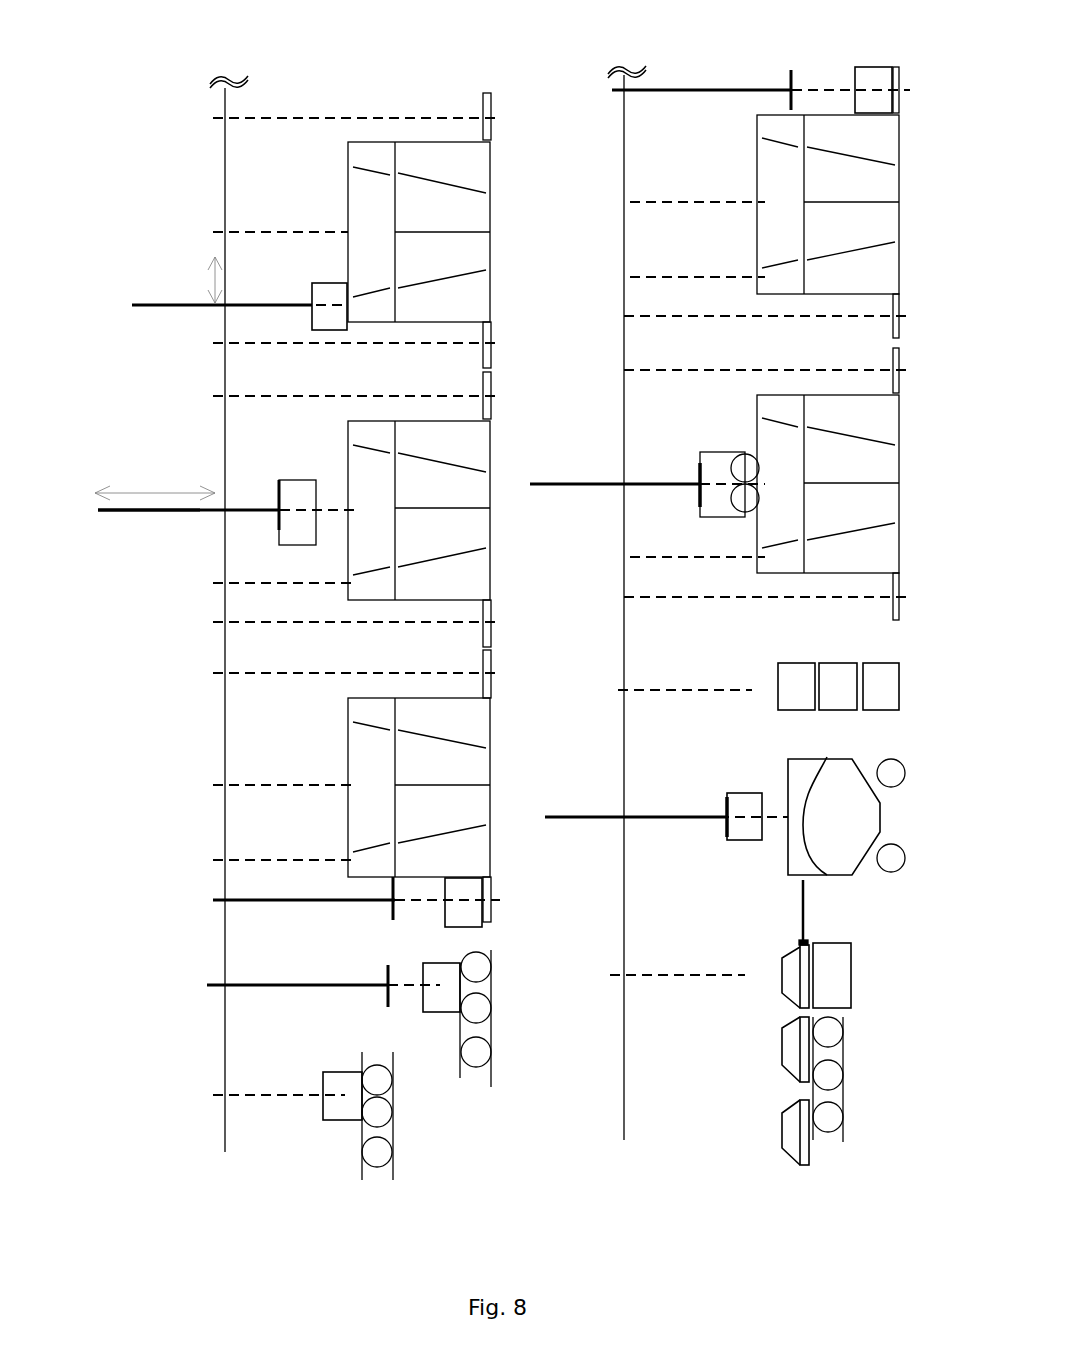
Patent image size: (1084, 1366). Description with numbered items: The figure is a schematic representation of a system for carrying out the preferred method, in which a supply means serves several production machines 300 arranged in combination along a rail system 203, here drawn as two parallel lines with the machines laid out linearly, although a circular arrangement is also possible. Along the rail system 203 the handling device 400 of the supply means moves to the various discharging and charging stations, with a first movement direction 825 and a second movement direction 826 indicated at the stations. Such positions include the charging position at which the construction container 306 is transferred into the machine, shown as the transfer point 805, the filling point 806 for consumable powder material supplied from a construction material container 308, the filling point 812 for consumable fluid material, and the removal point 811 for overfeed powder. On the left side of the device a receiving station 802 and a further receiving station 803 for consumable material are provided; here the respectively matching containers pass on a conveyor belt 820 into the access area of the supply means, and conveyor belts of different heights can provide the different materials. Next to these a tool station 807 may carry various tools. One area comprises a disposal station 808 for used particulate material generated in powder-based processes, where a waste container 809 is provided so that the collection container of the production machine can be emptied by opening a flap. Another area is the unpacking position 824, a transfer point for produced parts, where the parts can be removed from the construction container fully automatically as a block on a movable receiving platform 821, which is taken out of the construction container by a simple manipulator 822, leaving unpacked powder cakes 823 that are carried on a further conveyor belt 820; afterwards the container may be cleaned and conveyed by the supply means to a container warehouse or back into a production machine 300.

The rail system 203 is at (236, 167).
The production machine 300 is at (368, 480).
The construction container 306 is at (295, 493).
The construction material container 308 is at (330, 293).
The handling device 400 is at (145, 517).
The receiving station for consumable material 802 is at (285, 1102).
The receiving station for consumable material 803 is at (327, 994).
The transfer point for parts/tools 805 is at (229, 501).
The filling point for consumable powder material 806 is at (285, 286).
The tool station 807 is at (684, 694).
The disposal station 808 is at (684, 825).
The waste container 809 is at (793, 788).
The removal point for overfeed powder 811 is at (332, 889).
The filling point for consumable fluid material 812 is at (741, 97).
The conveyor belt 820 is at (797, 1142).
The receiving platform 821 is at (816, 970).
The manipulator 822 is at (830, 917).
The unpacked powder cakes 823 is at (765, 998).
The unpacking position 824 is at (696, 985).
The first movement direction 825 is at (131, 492).
The second movement direction 826 is at (205, 280).